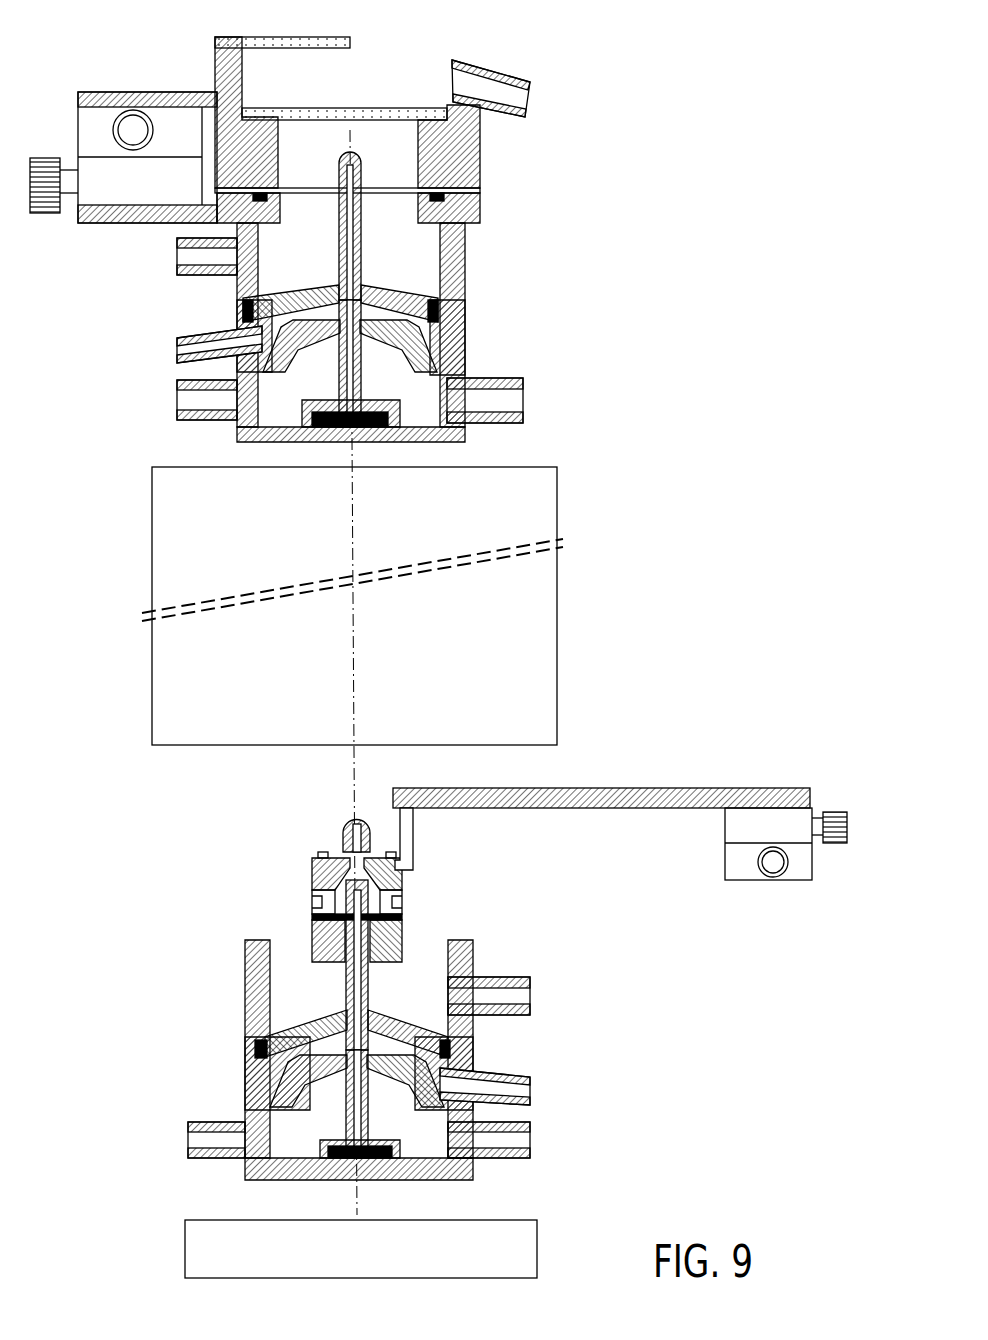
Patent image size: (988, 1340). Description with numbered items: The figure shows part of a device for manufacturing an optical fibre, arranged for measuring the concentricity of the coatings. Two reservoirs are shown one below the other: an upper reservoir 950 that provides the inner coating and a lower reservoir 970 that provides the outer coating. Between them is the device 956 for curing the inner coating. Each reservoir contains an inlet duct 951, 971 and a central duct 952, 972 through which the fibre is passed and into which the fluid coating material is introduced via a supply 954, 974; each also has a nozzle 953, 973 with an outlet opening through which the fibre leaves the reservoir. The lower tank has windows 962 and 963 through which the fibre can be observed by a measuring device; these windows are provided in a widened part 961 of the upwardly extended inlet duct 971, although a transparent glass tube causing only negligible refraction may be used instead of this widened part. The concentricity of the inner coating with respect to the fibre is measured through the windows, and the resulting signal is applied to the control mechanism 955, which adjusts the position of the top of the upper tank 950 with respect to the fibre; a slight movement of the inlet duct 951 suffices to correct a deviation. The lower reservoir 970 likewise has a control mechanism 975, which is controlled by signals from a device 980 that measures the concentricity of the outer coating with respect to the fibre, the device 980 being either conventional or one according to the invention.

The upper reservoir 950 is at (524, 246).
The inlet duct 951 is at (361, 228).
The central duct 952 is at (356, 363).
The nozzle 953 is at (378, 457).
The supply 954 is at (185, 349).
The control mechanism 955 is at (108, 184).
The curing device 956 is at (521, 619).
The widened part 961 is at (340, 850).
The window 962 is at (400, 898).
The window 963 is at (315, 892).
The lower reservoir 970 is at (556, 1043).
The inlet duct 971 is at (360, 998).
The central duct 972 is at (364, 1112).
The nozzle 973 is at (380, 1182).
The supply 974 is at (520, 1093).
The control mechanism 975 is at (748, 828).
The measuring device 980 is at (520, 1247).